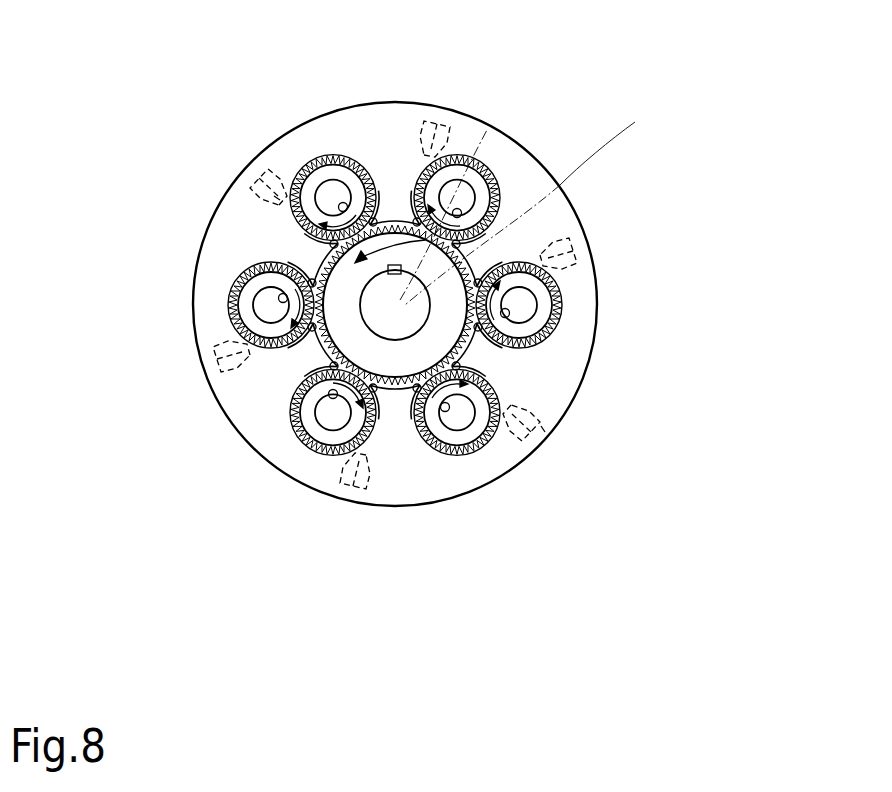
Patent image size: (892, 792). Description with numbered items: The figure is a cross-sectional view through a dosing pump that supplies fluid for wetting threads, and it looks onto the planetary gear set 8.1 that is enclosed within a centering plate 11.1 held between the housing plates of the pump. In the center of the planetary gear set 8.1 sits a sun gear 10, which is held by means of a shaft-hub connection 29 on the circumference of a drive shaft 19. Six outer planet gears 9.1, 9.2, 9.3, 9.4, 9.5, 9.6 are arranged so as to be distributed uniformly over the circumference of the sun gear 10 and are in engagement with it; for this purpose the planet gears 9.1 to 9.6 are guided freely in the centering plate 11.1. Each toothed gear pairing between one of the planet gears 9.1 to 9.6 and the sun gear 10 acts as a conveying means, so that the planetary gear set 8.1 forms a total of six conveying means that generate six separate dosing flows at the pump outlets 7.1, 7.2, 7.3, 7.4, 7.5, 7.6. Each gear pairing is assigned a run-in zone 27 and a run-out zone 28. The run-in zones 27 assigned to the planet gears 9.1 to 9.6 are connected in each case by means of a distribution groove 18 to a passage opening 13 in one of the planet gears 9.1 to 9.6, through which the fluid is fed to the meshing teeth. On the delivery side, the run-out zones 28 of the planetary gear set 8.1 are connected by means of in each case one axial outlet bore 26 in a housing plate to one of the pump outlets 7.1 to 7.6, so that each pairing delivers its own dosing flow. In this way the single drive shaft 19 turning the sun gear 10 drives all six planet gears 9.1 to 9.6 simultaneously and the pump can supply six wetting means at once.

The pump outlet 7.1 is at (595, 248).
The pump outlet 7.2 is at (538, 440).
The pump outlet 7.3 is at (348, 492).
The pump outlet 7.4 is at (217, 360).
The pump outlet 7.5 is at (265, 170).
The pump outlet 7.6 is at (440, 133).
The planetary gear set 8.1 is at (398, 166).
The planet gear 9.1 is at (542, 320).
The planet gear 9.2 is at (457, 443).
The planet gear 9.3 is at (330, 448).
The planet gear 9.4 is at (260, 328).
The planet gear 9.5 is at (313, 175).
The planet gear 9.6 is at (492, 180).
The sun gear 10 is at (398, 358).
The centering plate 11.1 is at (350, 132).
The passage opening 13 is at (527, 303).
The distribution groove 18 is at (505, 316).
The drive shaft 19 is at (538, 199).
The axial outlet bore 26 is at (530, 266).
The run-in zone 27 is at (545, 432).
The run-out zone 28 is at (482, 283).
The shaft-hub connection 29 is at (462, 208).